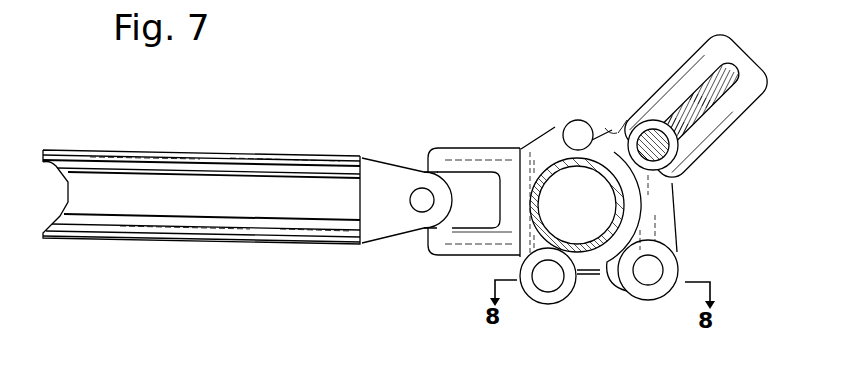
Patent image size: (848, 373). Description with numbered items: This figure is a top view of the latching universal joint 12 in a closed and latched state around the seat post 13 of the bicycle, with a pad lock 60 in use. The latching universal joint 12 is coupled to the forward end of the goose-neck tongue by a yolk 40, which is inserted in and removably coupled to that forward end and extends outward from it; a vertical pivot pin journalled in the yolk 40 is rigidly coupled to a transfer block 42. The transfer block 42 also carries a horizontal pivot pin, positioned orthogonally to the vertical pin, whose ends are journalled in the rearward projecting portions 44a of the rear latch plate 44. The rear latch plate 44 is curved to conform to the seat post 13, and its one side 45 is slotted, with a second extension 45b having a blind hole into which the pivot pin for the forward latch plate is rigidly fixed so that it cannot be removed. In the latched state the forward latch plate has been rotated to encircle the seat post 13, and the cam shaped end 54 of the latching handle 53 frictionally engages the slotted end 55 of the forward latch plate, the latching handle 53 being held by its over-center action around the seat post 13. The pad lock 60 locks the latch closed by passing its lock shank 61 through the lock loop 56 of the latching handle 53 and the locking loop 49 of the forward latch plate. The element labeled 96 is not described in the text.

The latching universal joint 12 is at (402, 55).
The seat post 13 is at (605, 128).
The yolk 40 is at (376, 182).
The transfer block 42 is at (452, 204).
The rear latch plate 44 is at (527, 198).
The rearward projecting portions 44a is at (460, 247).
The one side 45 is at (548, 150).
The second extension 45b is at (580, 118).
The locking loop 49 is at (627, 120).
The latching handle 53 is at (604, 191).
The cam shaped end 54 is at (623, 278).
The slotted end 55 is at (603, 290).
The lock loop 56 is at (672, 158).
The pad lock 60 is at (699, 107).
The lock shank 61 is at (693, 107).
The rail 96 is at (212, 218).